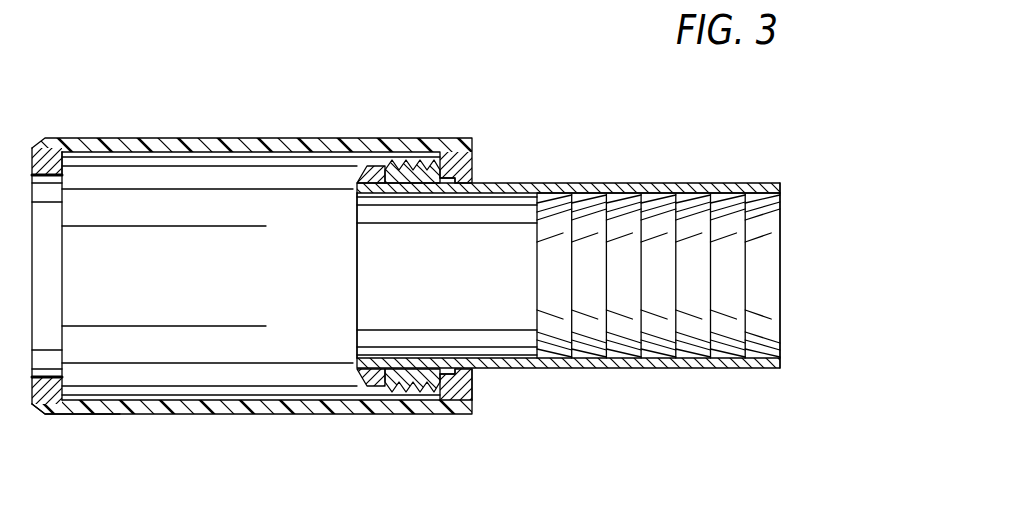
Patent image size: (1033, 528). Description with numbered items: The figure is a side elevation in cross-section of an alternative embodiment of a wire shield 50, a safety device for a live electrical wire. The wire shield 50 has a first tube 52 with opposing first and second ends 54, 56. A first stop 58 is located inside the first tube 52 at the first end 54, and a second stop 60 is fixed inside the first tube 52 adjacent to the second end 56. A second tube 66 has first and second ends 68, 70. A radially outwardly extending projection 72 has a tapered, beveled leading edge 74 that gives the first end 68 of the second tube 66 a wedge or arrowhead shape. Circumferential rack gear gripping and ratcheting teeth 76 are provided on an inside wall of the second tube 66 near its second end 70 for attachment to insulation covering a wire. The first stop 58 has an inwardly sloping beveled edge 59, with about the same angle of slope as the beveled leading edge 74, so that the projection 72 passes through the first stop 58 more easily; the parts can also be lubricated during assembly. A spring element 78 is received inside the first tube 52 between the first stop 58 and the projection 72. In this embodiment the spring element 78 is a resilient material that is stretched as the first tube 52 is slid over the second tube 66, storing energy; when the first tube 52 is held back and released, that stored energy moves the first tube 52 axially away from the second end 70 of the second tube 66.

The wire shield 50 is at (265, 440).
The first tube 52 is at (243, 137).
The first end of first tube 54 is at (463, 137).
The second end of first tube 56 is at (59, 139).
The first stop 58 is at (452, 400).
The beveled edge 59 is at (473, 375).
The second stop 60 is at (66, 167).
The second tube 66 is at (615, 182).
The first end of second tube 68 is at (357, 262).
The second end of second tube 70 is at (775, 182).
The radially outwardly extending projection 72 is at (382, 167).
The tapered beveled leading edge 74 is at (359, 164).
The circumferential rack gear gripping and ratcheting teeth 76 is at (763, 348).
The spring element 78 is at (422, 167).